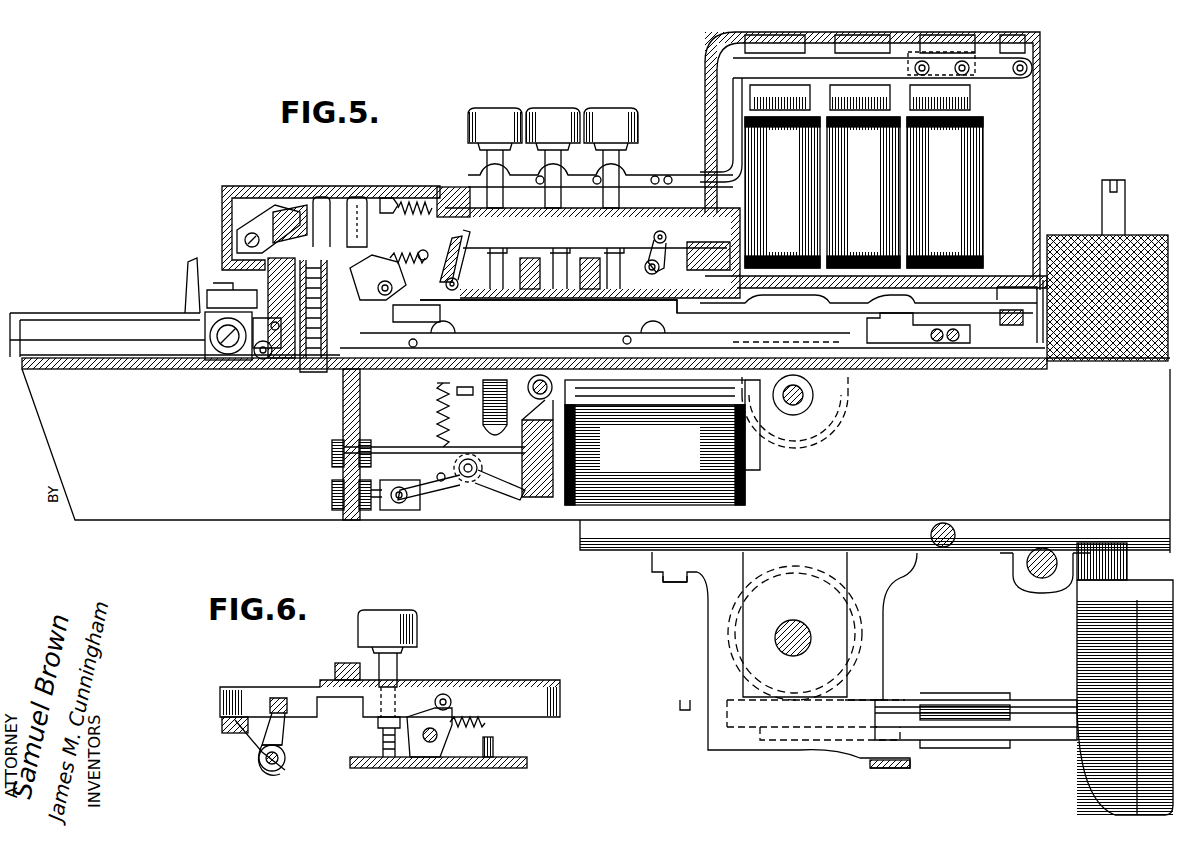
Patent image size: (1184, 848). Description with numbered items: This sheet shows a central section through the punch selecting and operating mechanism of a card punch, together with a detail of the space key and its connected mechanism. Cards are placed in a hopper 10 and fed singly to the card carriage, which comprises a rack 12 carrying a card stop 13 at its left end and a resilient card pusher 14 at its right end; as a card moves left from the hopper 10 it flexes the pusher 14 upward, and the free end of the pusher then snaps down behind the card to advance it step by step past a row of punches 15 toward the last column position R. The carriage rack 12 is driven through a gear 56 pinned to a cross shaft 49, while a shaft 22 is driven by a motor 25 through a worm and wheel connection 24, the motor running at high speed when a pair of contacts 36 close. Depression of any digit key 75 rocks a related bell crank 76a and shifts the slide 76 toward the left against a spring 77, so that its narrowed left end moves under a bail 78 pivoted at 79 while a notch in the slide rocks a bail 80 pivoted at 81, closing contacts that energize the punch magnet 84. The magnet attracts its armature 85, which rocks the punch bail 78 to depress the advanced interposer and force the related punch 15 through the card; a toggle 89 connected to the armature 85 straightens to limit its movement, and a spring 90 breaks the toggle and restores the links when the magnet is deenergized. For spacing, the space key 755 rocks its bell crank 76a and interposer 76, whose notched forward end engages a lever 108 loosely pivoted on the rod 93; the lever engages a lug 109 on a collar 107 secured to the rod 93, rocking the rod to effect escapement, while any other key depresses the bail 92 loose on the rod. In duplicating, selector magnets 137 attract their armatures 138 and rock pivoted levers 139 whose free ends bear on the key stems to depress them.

In FIG. 5, the hopper 10 is at (1122, 258).
In FIG. 5, the rack 12 is at (997, 277).
In FIG. 5, the card stop 13 is at (277, 362).
In FIG. 5, the card pusher 14 is at (897, 345).
In FIG. 5, the punches 15 is at (293, 362).
In FIG. 5, the shaft 22 is at (791, 640).
In FIG. 5, the worm and wheel connection 24 is at (780, 717).
In FIG. 5, the motor 25 is at (1100, 652).
In FIG. 5, the contacts 36 is at (1047, 717).
In FIG. 5, the cross shaft 49 is at (793, 412).
In FIG. 5, the gear 56 is at (837, 420).
In FIG. 5, the digit representing keys 75 is at (552, 117).
In FIG. 6, the space key 755 is at (405, 633).
In FIG. 5, the slide 76 is at (500, 227).
In FIG. 6, the slide 76 is at (296, 692).
In FIG. 5, the bell crank 76a is at (667, 257).
In FIG. 6, the bell crank 76a is at (445, 746).
In FIG. 5, the spring 77 is at (411, 203).
In FIG. 5, the bail 78 is at (283, 212).
In FIG. 5, the pivot 79 is at (243, 237).
In FIG. 5, the bail 80 is at (455, 256).
In FIG. 5, the pivot 81 is at (455, 291).
In FIG. 5, the punch magnet 84 is at (662, 442).
In FIG. 5, the armature 85 is at (527, 493).
In FIG. 5, the toggle 89 is at (487, 480).
In FIG. 5, the spring 90 is at (437, 418).
In FIG. 5, the bail 92 is at (358, 242).
In FIG. 6, the bail 92 is at (222, 725).
In FIG. 5, the rod 93 is at (383, 295).
In FIG. 6, the rod 93 is at (274, 771).
In FIG. 6, the collar 107 is at (290, 756).
In FIG. 6, the lever 108 is at (280, 700).
In FIG. 6, the lug 109 is at (258, 754).
In FIG. 5, the selector magnets 137 is at (957, 148).
In FIG. 5, the armature 138 is at (973, 107).
In FIG. 5, the pivoted lever 139 is at (732, 84).
In FIG. 5, the last column position R is at (560, 350).